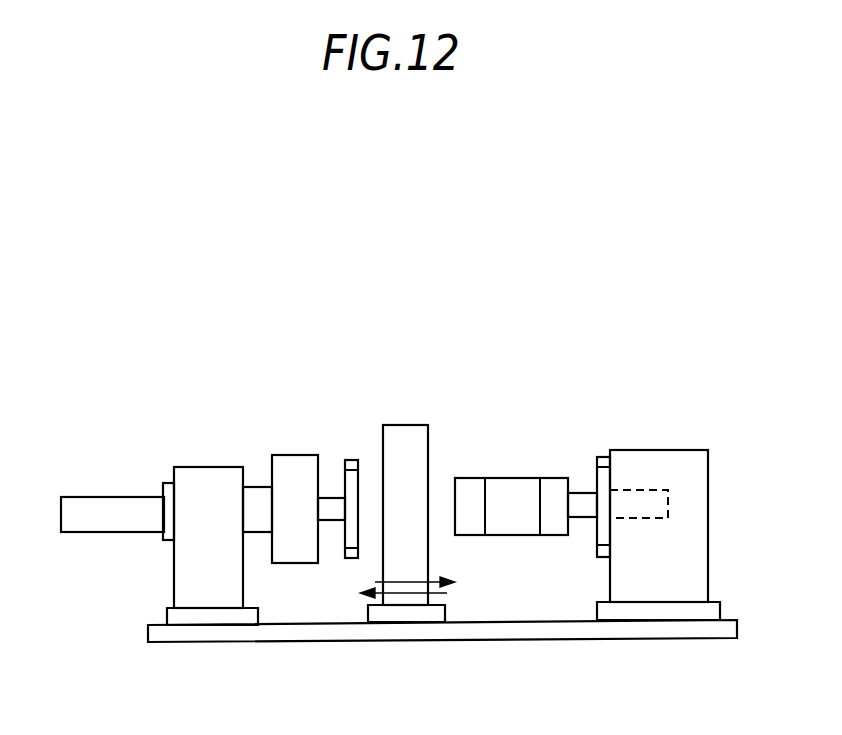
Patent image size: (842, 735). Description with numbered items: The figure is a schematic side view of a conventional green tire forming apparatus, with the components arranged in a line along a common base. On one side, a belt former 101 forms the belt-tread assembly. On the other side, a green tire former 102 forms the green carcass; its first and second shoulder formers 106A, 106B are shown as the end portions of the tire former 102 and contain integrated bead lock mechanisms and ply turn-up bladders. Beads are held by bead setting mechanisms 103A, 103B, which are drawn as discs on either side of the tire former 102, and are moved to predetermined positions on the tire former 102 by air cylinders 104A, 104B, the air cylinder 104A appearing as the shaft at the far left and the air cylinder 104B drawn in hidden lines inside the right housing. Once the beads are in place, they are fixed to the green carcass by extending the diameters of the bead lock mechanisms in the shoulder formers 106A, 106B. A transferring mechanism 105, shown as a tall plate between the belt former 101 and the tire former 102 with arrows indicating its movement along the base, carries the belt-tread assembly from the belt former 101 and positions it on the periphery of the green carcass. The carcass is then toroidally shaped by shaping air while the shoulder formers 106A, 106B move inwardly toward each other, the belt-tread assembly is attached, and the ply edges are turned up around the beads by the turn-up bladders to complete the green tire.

The air cylinder 104A is at (113, 496).
The belt former 101 is at (287, 454).
The bead setting mechanism 103A is at (357, 460).
The transferring mechanism 105 is at (423, 425).
The green tire former 102 is at (539, 431).
The first shoulder former 106A is at (477, 478).
The second shoulder former 106B is at (563, 478).
The bead setting mechanism 103B is at (603, 456).
The air cylinder 104B is at (632, 485).